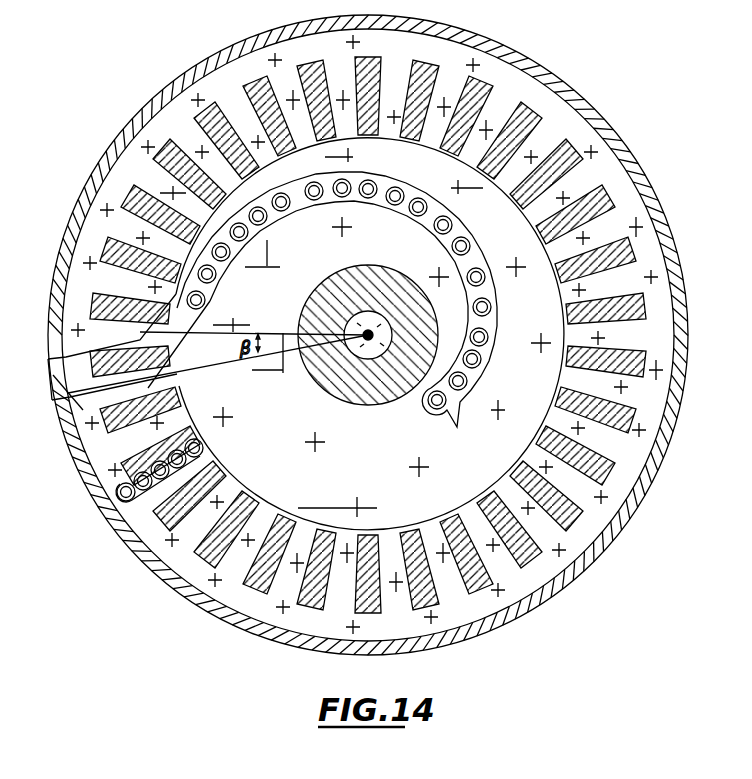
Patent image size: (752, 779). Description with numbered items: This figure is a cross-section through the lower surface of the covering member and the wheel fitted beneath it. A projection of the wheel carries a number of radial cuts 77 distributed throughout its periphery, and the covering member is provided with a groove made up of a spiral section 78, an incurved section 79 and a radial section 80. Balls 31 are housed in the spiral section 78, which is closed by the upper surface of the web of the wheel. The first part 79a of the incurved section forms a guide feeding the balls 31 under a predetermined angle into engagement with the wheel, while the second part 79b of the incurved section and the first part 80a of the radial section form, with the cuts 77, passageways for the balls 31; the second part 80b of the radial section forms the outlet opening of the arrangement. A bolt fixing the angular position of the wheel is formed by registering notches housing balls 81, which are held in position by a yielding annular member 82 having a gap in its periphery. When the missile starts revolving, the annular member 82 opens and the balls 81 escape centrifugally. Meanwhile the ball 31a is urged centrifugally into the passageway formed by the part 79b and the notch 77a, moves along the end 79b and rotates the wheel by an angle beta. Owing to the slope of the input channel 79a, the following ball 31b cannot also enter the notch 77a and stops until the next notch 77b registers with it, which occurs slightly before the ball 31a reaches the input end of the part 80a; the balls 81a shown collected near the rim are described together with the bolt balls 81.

The yielding annular member 82 is at (250, 612).
The radial cuts 77 is at (448, 580).
The notch 77a is at (178, 372).
The next notch 77b is at (118, 361).
The spiral section 78 is at (500, 302).
The balls 31 is at (445, 410).
The first ball 31a is at (206, 301).
The following ball 31b is at (217, 276).
The incurved section 79 is at (138, 338).
The first part of incurved section 79a is at (254, 345).
The second part of incurved section 79b is at (222, 360).
The radial section 80 is at (78, 430).
The first part of radial section 80a is at (112, 424).
The second part of radial section 80b is at (80, 400).
The bolt balls 81 is at (128, 510).
The collected balls 81a is at (118, 497).